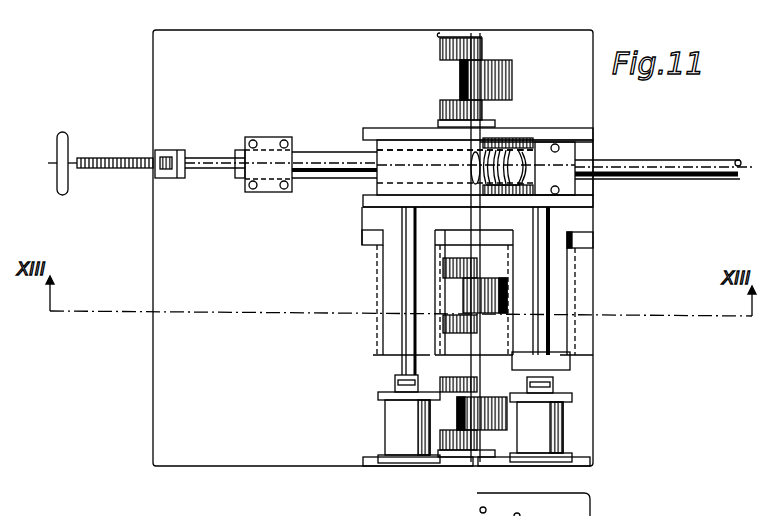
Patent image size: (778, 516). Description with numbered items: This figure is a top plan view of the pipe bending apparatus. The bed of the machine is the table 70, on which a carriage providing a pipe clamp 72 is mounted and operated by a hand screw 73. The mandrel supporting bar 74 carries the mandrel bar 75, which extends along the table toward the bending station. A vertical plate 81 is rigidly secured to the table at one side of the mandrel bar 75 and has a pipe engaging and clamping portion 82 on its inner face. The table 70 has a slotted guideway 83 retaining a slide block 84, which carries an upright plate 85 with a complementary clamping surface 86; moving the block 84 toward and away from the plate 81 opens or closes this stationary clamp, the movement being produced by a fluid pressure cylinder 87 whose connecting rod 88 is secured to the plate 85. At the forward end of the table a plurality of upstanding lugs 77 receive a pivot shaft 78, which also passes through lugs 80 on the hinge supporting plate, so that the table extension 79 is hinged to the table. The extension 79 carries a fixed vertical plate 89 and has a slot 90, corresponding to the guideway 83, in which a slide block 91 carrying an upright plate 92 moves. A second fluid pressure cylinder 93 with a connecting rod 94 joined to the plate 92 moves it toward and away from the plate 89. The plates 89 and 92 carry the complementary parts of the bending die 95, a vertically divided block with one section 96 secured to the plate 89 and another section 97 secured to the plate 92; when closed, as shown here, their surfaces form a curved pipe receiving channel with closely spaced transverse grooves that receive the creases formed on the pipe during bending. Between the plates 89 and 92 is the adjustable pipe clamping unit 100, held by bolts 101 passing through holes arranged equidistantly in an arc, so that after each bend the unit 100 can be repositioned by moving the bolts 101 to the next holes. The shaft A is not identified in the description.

The bed 70 is at (373, 248).
The pipe clamp 72 is at (247, 190).
The hand screw 73 is at (108, 158).
The mandrel supporting bar 74 is at (176, 150).
The mandrel bar 75 is at (212, 163).
The upstanding lugs 77 is at (484, 50).
The pivot or shaft 78 is at (478, 353).
The hinge supporting plate (table extension) 79 is at (588, 380).
The lugs 80 is at (459, 79).
The vertical plate 81 is at (393, 135).
The pipe engaging and clamping portion 82 is at (388, 150).
The slotted guideway 83 is at (378, 268).
The slide block 84 is at (390, 276).
The upright plate 85 is at (366, 206).
The pipe engaging and clamping surface 86 is at (378, 185).
The fluid pressure cylinder 87 is at (396, 415).
The connecting rod 88 is at (394, 363).
The fixed vertical plate 89 is at (574, 131).
The slot 90 is at (569, 301).
The slide block 91 is at (563, 283).
The upright plate 92 is at (590, 201).
The fluid pressure cylinder 93 is at (566, 426).
The connecting rod 94 is at (554, 380).
The bending die 95 is at (545, 137).
The die section 96 is at (492, 139).
The die section 97 is at (498, 190).
The adjustable pipe clamping unit 100 is at (565, 152).
The bolts 101 is at (546, 212).
The shaft A is at (656, 161).